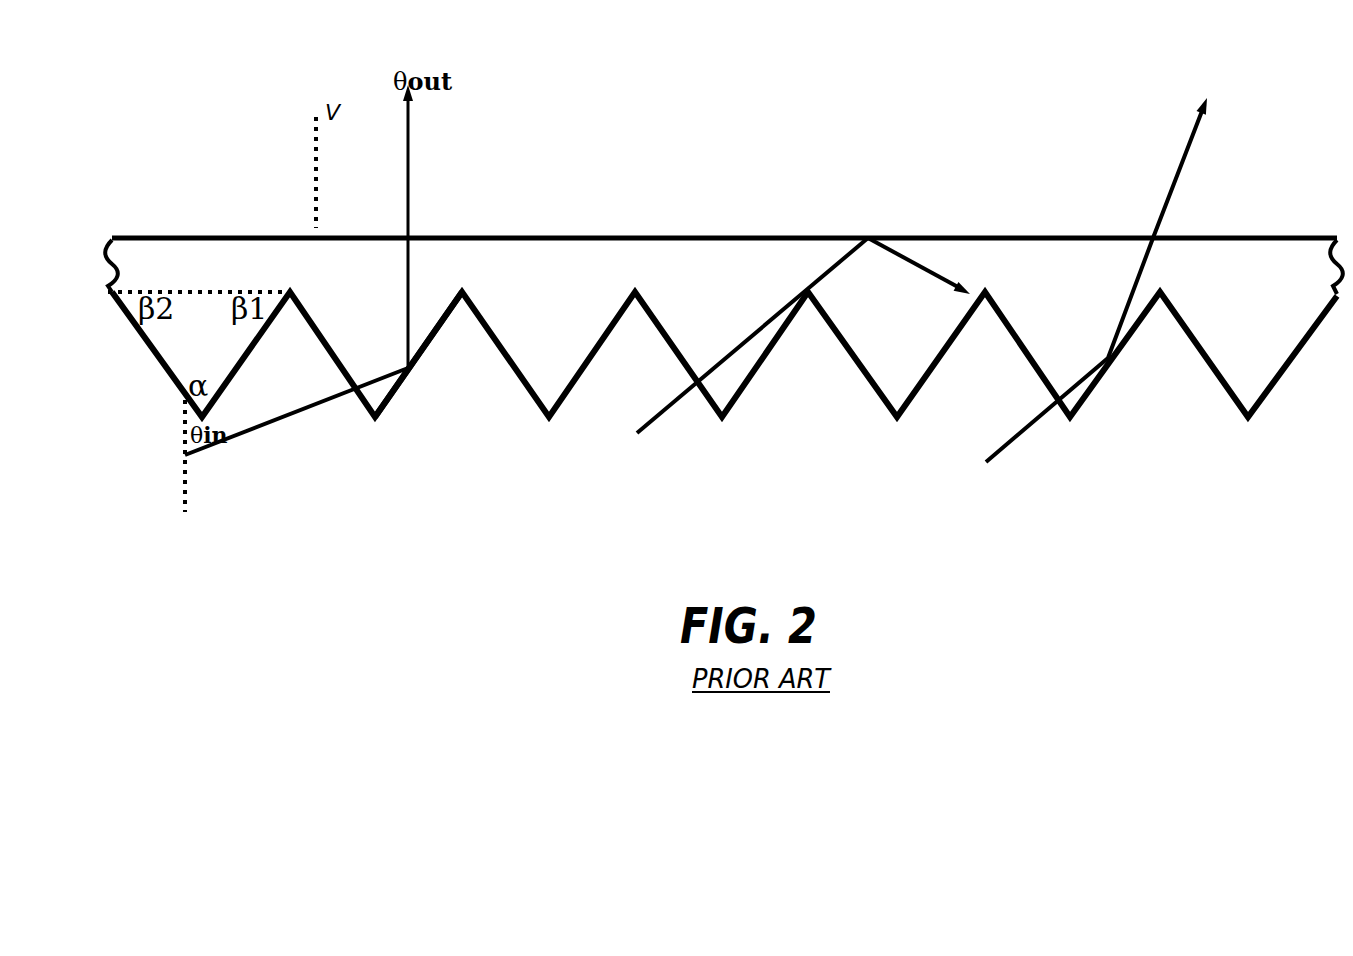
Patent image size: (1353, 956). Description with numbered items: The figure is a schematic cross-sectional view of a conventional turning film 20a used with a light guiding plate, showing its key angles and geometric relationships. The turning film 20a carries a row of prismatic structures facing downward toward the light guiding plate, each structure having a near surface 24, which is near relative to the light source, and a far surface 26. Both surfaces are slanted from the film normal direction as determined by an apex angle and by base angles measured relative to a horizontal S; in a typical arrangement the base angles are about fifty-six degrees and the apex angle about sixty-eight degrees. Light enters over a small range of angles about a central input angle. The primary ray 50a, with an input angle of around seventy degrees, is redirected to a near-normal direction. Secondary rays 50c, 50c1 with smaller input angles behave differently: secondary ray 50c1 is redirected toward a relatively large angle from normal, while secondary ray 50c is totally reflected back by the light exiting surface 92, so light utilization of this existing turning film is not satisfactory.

The turning film 20a is at (248, 248).
The horizontal S is at (157, 288).
The near surface 24 is at (317, 345).
The far surface 26 is at (422, 353).
The primary ray 50a is at (263, 428).
The secondary ray 50c is at (662, 415).
The secondary ray 50c1 is at (1020, 432).
The light exiting surface 92 is at (838, 238).